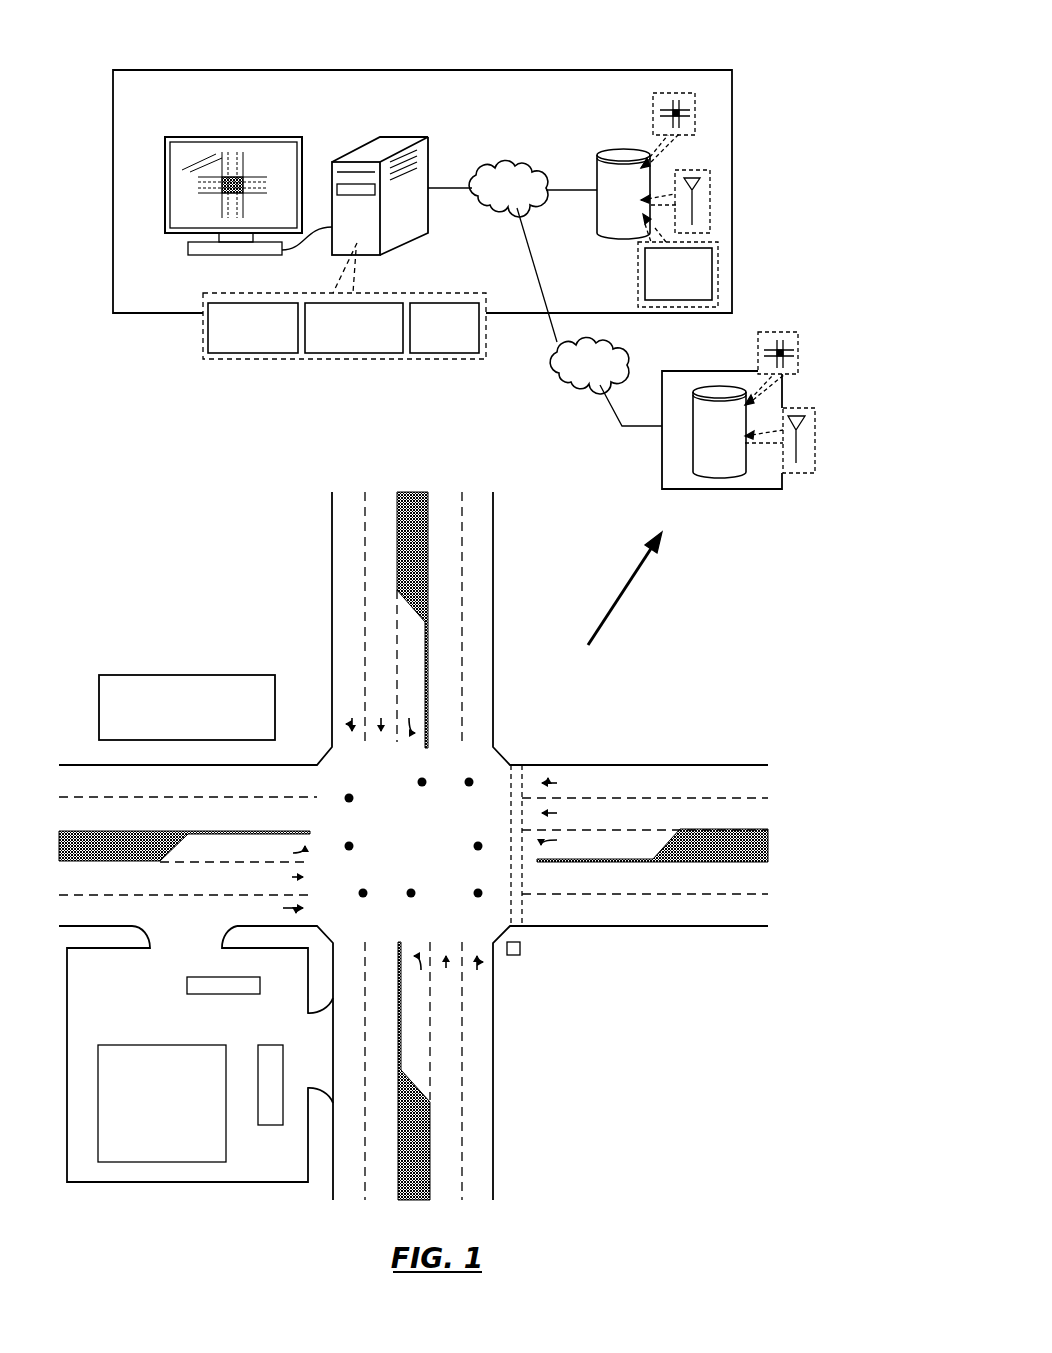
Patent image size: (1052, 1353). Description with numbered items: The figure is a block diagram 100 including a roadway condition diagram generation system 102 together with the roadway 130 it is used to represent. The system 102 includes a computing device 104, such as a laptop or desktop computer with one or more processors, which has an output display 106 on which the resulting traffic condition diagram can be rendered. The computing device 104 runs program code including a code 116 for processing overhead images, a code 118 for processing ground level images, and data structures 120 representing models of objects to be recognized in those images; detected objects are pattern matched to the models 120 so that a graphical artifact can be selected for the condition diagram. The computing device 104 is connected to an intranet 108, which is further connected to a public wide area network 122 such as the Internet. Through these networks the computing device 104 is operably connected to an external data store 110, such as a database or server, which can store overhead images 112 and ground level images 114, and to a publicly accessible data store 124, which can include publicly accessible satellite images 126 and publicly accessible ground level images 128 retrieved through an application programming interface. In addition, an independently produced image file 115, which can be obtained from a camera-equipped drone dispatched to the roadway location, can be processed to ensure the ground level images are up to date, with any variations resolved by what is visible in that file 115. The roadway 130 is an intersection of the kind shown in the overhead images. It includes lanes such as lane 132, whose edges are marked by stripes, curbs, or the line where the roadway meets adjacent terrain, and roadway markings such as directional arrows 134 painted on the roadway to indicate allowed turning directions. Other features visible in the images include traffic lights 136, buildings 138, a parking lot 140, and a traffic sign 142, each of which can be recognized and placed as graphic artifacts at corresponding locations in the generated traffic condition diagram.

The block diagram 100 is at (731, 28).
The roadway condition diagram generation system 102 is at (136, 70).
The computing device 104 is at (428, 148).
The display 106 is at (206, 137).
The intranet 108 is at (507, 163).
The external data store 110 is at (640, 230).
The overhead images 112 is at (696, 110).
The ground level images 114 is at (712, 193).
The independently produced image file 115 is at (718, 273).
The code for processing overhead images 116 is at (240, 353).
The code for processing ground level images 118 is at (335, 353).
The models 120 is at (445, 353).
The public wide area network 122 is at (568, 385).
The publicly accessible data store 124 is at (662, 473).
The publicly accessible satellite images 126 is at (798, 350).
The publicly accessible ground level images 128 is at (815, 430).
The roadway 130 is at (112, 571).
The lane 132 is at (340, 542).
The directional arrows 134 is at (556, 783).
The traffic lights 136 is at (472, 846).
The buildings 138 is at (99, 697).
The parking lot 140 is at (86, 990).
The traffic sign 142 is at (519, 955).